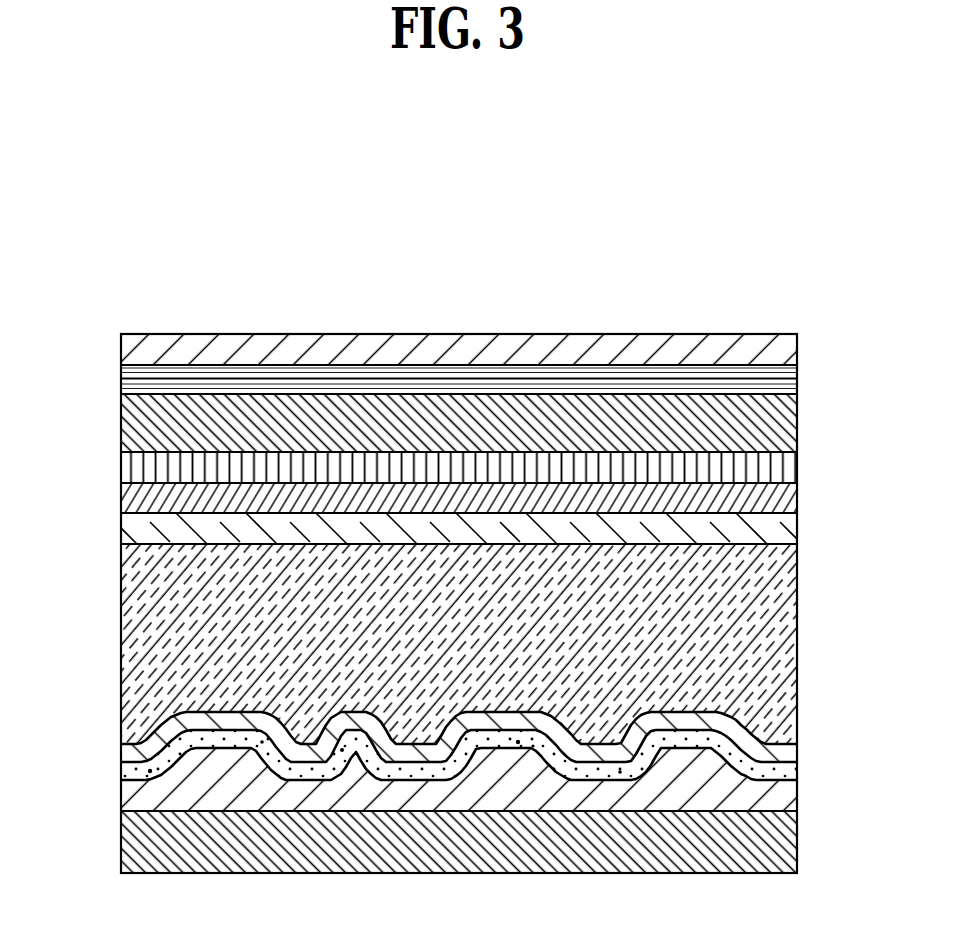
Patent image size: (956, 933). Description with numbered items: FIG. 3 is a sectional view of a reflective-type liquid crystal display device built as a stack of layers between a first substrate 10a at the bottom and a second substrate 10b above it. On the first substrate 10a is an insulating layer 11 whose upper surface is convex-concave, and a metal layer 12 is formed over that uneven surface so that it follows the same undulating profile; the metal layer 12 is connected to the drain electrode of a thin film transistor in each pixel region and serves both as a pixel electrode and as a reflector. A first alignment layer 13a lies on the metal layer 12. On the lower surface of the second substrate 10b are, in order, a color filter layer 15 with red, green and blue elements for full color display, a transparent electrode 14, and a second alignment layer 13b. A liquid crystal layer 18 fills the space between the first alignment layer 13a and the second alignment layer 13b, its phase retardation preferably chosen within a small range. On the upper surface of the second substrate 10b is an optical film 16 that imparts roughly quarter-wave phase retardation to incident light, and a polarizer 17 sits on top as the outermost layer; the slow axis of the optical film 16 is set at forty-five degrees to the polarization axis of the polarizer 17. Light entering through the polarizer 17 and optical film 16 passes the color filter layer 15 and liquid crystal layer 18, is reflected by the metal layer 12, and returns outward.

The first substrate 10a is at (128, 846).
The second substrate 10b is at (783, 423).
The insulating layer 11 is at (782, 797).
The metal layer 12 is at (130, 771).
The first alignment layer 13a is at (783, 753).
The second alignment layer 13b is at (128, 531).
The transparent electrode 14 is at (782, 500).
The color filter layer 15 is at (128, 469).
The optical film 16 is at (128, 381).
The polarizer 17 is at (790, 350).
The liquid crystal layer 18 is at (128, 631).